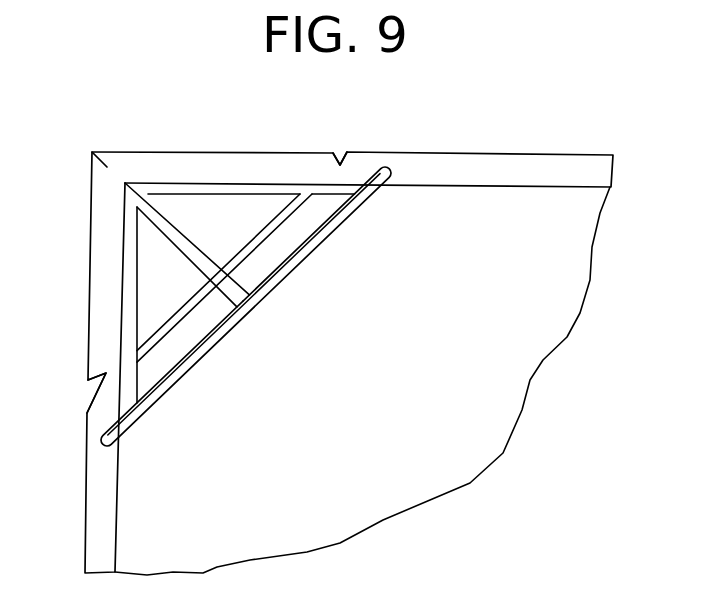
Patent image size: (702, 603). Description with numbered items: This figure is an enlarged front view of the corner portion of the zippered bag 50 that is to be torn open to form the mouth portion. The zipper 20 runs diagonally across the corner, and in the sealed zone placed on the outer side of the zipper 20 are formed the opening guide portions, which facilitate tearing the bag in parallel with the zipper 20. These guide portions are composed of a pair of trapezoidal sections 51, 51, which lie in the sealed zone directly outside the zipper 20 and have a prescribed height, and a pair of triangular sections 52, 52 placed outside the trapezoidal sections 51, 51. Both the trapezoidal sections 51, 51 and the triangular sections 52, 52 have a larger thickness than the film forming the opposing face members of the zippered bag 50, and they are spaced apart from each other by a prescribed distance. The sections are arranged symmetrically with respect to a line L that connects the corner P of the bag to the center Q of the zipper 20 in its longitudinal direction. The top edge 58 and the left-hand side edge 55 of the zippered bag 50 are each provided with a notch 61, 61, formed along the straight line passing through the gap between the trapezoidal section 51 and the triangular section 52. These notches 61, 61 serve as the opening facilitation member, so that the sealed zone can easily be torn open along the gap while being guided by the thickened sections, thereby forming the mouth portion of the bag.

The zippered bag 50 is at (450, 142).
The top edge 58 is at (535, 155).
The left-hand side edge 55 is at (92, 512).
The notch 61 is at (345, 152).
The zipper 20 is at (360, 206).
The trapezoidal section 51 is at (258, 254).
The triangular section 52 is at (218, 227).
The corner P is at (94, 152).
The line L is at (148, 165).
The center Q is at (243, 301).